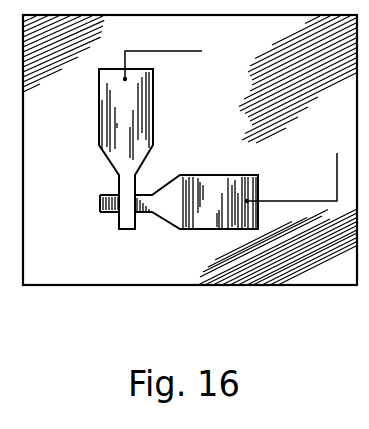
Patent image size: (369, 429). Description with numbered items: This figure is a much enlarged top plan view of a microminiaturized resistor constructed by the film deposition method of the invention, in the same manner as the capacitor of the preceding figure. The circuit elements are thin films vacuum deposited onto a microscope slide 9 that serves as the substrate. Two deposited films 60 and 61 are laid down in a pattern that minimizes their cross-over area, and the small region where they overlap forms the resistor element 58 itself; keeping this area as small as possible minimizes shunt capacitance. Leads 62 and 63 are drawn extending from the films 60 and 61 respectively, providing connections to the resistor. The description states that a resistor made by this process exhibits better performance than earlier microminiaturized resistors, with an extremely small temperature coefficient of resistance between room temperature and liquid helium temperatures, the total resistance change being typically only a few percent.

The microscope slide 9 is at (134, 273).
The resistor element 58 is at (128, 205).
The film 60 is at (229, 178).
The film 61 is at (130, 117).
The connecting lead 62 is at (277, 201).
The connecting lead 63 is at (155, 51).